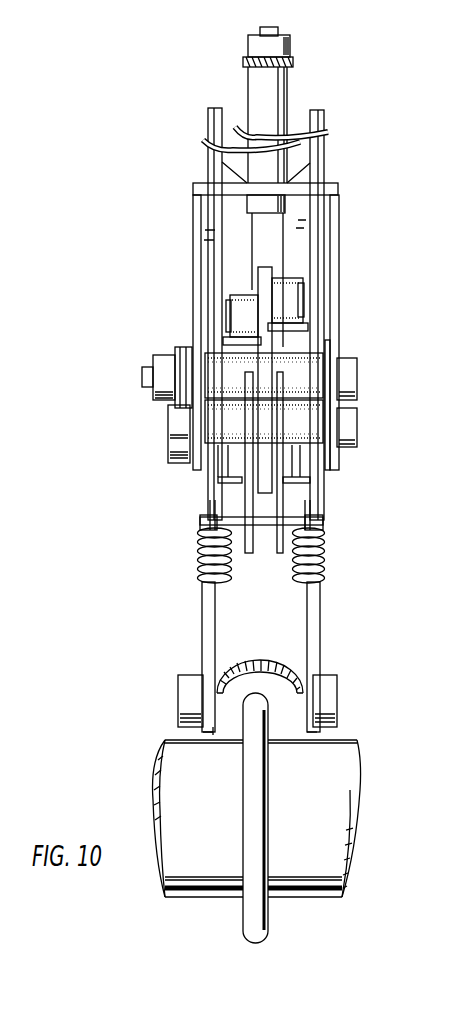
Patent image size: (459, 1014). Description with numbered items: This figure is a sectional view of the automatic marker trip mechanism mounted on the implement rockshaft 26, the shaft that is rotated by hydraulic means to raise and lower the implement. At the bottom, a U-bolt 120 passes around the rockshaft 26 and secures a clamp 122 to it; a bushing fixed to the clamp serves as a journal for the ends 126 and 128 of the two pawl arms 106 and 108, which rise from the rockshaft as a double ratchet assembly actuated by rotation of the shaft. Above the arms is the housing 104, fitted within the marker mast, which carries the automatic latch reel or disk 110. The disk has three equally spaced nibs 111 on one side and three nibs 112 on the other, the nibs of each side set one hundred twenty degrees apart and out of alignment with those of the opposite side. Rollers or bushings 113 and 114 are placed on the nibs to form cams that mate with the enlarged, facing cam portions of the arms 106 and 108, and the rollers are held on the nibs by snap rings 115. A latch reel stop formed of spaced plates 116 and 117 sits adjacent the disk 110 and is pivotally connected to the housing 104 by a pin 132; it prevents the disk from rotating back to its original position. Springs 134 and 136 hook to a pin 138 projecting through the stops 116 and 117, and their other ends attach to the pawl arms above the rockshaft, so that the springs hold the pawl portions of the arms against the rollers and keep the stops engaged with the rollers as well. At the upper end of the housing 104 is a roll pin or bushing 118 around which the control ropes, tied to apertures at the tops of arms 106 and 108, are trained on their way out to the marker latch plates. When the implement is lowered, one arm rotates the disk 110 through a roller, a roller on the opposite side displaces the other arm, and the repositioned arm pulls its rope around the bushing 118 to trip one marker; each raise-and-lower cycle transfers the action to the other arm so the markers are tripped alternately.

The rockshaft 26 is at (343, 798).
The housing 104 is at (339, 230).
The pawl arm 106 is at (208, 153).
The pawl arm 108 is at (324, 153).
The latch reel disk 110 is at (267, 343).
The nibs 111 is at (303, 298).
The nibs 112 is at (230, 312).
The rollers or bushings 113 is at (293, 280).
The rollers or bushings 114 is at (230, 290).
The snap rings 115 is at (228, 338).
The reel stop plate 116 is at (242, 497).
The reel stop plate 117 is at (285, 497).
The roll pin or bushing 118 is at (289, 79).
The U-bolt 120 is at (262, 826).
The clamp 122 is at (262, 660).
The pawl arm end 126 is at (207, 735).
The pawl arm end 128 is at (312, 735).
The pin 132 is at (168, 425).
The spring 134 is at (197, 560).
The spring 136 is at (325, 565).
The pin 138 is at (323, 522).